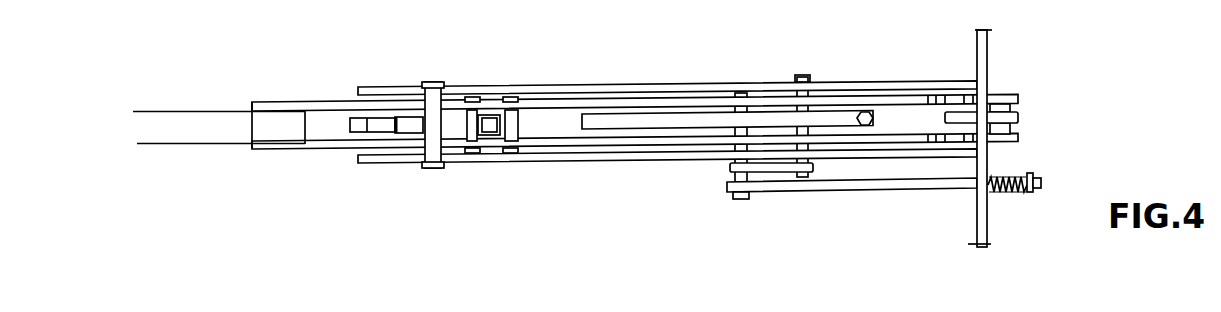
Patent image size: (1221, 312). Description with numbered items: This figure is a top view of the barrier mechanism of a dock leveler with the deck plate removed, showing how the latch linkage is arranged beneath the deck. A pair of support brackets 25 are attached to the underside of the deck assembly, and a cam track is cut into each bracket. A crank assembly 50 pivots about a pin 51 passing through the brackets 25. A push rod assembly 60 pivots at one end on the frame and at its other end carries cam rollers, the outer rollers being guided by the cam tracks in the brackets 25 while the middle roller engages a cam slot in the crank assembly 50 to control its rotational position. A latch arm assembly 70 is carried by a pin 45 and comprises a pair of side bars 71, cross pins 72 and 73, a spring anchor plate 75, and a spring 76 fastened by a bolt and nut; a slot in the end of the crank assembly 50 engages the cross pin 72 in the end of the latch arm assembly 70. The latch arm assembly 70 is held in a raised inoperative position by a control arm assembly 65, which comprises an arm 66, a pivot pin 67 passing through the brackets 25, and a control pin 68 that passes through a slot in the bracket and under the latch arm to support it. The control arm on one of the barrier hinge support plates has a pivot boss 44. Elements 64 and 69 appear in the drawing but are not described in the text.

The support brackets 25 is at (567, 85).
The pivot boss 44 is at (1053, 110).
The pin 45 is at (1008, 93).
The crank assembly 50 is at (343, 123).
The pin 51 is at (437, 168).
The push rod assembly 60 is at (203, 124).
The wall panel 64 is at (1000, 198).
The control arm assembly 65 is at (730, 172).
The arm 66 is at (806, 77).
The pivot pin 67 is at (745, 199).
The control pin 68 is at (917, 192).
The spring-loaded bolt 69 is at (1030, 175).
The latch arm assembly 70 is at (653, 100).
The side bars 71 is at (635, 99).
The cross pin 72 is at (473, 97).
The cross pin 73 is at (512, 97).
The spring anchor plate 75 is at (872, 112).
The spring 76 is at (670, 130).